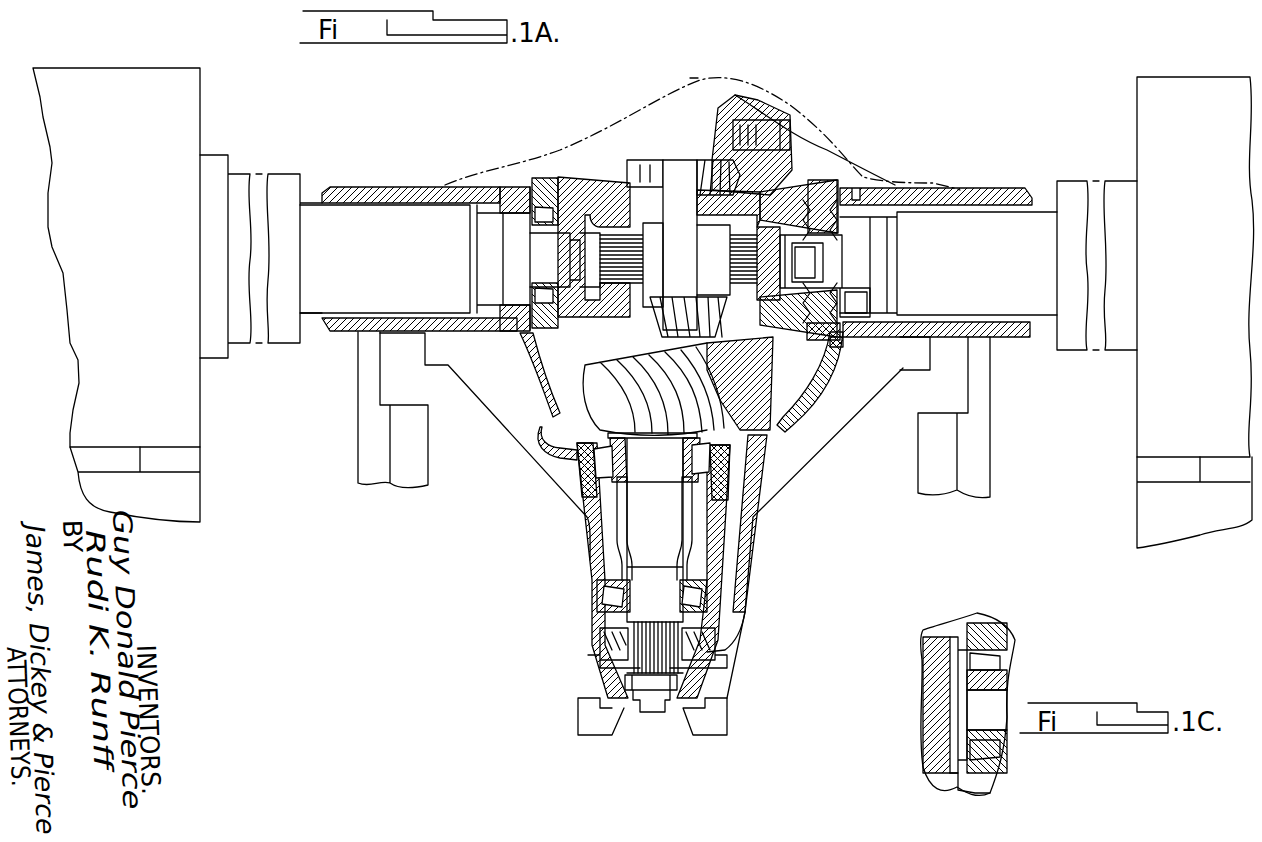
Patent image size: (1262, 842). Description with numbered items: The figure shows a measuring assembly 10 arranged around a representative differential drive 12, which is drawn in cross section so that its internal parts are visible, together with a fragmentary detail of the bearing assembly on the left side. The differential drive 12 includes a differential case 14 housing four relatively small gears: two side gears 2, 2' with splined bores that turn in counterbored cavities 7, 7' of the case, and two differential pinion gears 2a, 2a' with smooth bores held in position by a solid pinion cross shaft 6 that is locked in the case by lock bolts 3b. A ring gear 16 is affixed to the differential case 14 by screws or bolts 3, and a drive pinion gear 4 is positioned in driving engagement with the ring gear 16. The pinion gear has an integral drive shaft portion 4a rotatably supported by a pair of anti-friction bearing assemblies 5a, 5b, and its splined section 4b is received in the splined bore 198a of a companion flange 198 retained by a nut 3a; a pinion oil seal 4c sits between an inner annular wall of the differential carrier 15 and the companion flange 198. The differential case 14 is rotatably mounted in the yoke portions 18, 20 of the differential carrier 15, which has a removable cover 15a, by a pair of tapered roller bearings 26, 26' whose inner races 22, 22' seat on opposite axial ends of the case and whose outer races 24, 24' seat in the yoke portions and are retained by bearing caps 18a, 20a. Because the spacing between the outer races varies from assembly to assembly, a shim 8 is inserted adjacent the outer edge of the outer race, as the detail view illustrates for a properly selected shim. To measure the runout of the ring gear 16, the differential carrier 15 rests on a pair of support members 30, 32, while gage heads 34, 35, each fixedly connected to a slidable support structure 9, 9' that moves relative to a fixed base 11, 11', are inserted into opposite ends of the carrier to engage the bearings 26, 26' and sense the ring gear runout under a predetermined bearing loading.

In FIG. 1A, the side gear 2 is at (594, 234).
In FIG. 1A, the differential pinion gear 2a is at (695, 160).
In FIG. 1A, the differential pinion gear 2a' is at (605, 343).
In FIG. 1A, the side gear 2' is at (767, 237).
In FIG. 1A, the screws or bolts 3 is at (785, 150).
In FIG. 1A, the nut 3a is at (650, 720).
In FIG. 1A, the lock bolts 3b is at (628, 165).
In FIG. 1A, the drive pinion gear 4 is at (600, 393).
In FIG. 1A, the drive shaft portion 4a is at (668, 522).
In FIG. 1A, the splined section 4b is at (742, 632).
In FIG. 1A, the pinion oil seal 4c is at (600, 627).
In FIG. 1A, the anti-friction bearing assembly 5a is at (712, 590).
In FIG. 1A, the anti-friction bearing assembly 5b is at (742, 481).
In FIG. 1A, the pinion cross shaft 6 is at (690, 274).
In FIG. 1A, the counterbored cavity 7 is at (564, 252).
In FIG. 1A, the counterbored cavity 7' is at (838, 240).
In FIG. 1C, the shim 8 is at (975, 623).
In FIG. 1A, the slidable support structure 9 is at (1195, 267).
In FIG. 1A, the slidable support structure 9' is at (116, 257).
In FIG. 1A, the measuring assembly 10 is at (247, 366).
In FIG. 1A, the fixed base 11 is at (1194, 502).
In FIG. 1A, the fixed base 11' is at (135, 484).
In FIG. 1A, the differential drive 12 is at (826, 444).
In FIG. 1A, the differential case 14 is at (812, 172).
In FIG. 1C, the differential case 14 is at (1010, 740).
In FIG. 1A, the differential carrier 15 is at (817, 400).
In FIG. 1C, the differential carrier 15 is at (946, 790).
In FIG. 1A, the removable cover 15a is at (712, 62).
In FIG. 1A, the ring gear 16 is at (760, 100).
In FIG. 1A, the yoke portion 18 is at (415, 190).
In FIG. 1A, the bearing cap 18a is at (855, 180).
In FIG. 1A, the yoke portion 20 is at (968, 353).
In FIG. 1A, the bearing cap 20a is at (545, 183).
In FIG. 1A, the inner race 22 is at (874, 261).
In FIG. 1A, the inner race 22' is at (537, 265).
In FIG. 1C, the inner race 22' is at (1038, 689).
In FIG. 1A, the outer race 24 is at (886, 369).
In FIG. 1A, the outer race 24' is at (561, 367).
In FIG. 1C, the outer race 24' is at (1007, 798).
In FIG. 1A, the tapered roller bearing 26 is at (936, 244).
In FIG. 1A, the tapered roller bearing 26' is at (485, 334).
In FIG. 1C, the tapered roller bearing 26' is at (1037, 761).
In FIG. 1A, the support member 30 is at (978, 462).
In FIG. 1A, the support member 32 is at (370, 448).
In FIG. 1A, the gage head 34 is at (1028, 268).
In FIG. 1A, the gage head 35 is at (414, 260).
In FIG. 1A, the companion flange 198 is at (727, 726).
In FIG. 1A, the splined bore 198a is at (640, 653).